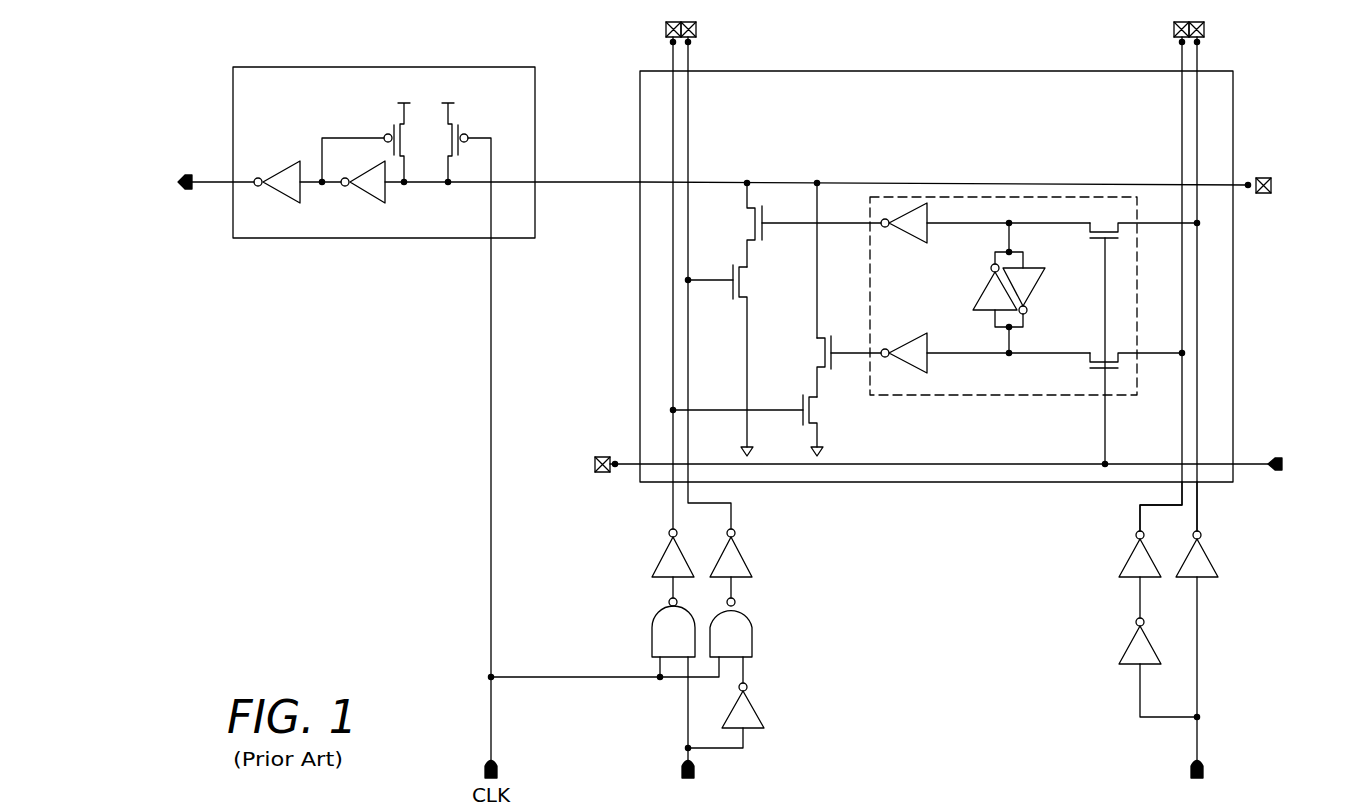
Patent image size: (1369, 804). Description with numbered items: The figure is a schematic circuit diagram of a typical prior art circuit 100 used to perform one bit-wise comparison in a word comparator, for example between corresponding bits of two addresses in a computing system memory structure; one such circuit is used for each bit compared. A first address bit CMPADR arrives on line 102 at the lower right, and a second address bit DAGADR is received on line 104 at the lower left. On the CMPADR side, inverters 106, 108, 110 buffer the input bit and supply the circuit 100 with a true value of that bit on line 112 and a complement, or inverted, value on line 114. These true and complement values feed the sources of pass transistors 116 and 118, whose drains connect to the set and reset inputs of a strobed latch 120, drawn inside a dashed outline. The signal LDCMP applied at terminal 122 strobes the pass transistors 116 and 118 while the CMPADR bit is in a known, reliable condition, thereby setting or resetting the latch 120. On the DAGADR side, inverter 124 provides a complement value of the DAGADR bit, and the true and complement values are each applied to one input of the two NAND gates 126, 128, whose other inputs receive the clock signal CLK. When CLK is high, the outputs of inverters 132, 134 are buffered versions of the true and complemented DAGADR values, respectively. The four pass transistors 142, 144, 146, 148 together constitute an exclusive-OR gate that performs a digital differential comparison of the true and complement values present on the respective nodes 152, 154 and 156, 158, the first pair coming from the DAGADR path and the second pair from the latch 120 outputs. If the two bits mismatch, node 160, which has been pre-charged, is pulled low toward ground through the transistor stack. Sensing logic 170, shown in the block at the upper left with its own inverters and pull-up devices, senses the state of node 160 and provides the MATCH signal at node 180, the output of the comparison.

The prior art circuit 100 is at (1247, 67).
The compare address input CMPADR 102 is at (1200, 746).
The line 104 is at (686, 755).
The inverter 106 is at (1208, 559).
The inverter 108 is at (1128, 646).
The inverter 110 is at (1128, 559).
The line 112 is at (1138, 513).
The line 114 is at (1200, 515).
The pass transistor 116 is at (1094, 369).
The pass transistor 118 is at (1099, 242).
The strobed latch 120 is at (1004, 407).
The terminal 122 is at (1210, 462).
The inverter 124 is at (752, 706).
The NAND gate 126 is at (655, 616).
The NAND gate 128 is at (750, 617).
The inverter 132 is at (665, 548).
The inverter 134 is at (740, 549).
The pass transistor 142 is at (750, 237).
The pass transistor 144 is at (743, 298).
The pass transistor 146 is at (822, 366).
The pass transistor 148 is at (815, 423).
The node 152 is at (673, 410).
The node 154 is at (688, 280).
The node 156 is at (845, 224).
The node 158 is at (853, 353).
The node 160 is at (817, 183).
The sensing logic 170 is at (385, 238).
The node 180 is at (184, 190).